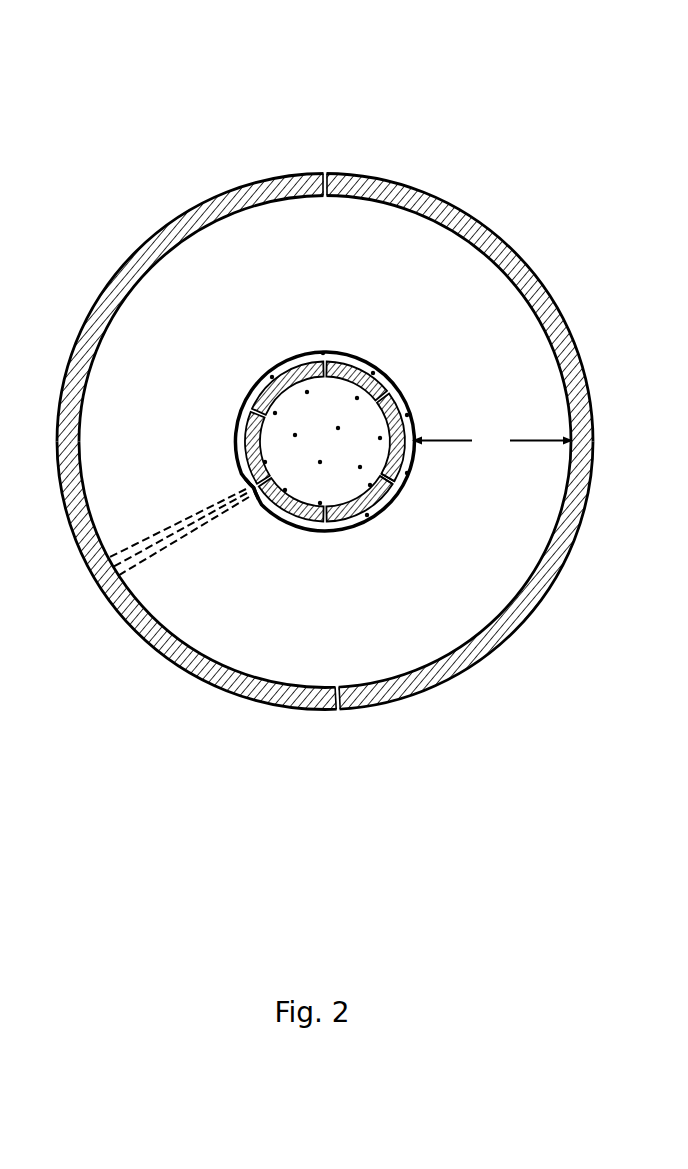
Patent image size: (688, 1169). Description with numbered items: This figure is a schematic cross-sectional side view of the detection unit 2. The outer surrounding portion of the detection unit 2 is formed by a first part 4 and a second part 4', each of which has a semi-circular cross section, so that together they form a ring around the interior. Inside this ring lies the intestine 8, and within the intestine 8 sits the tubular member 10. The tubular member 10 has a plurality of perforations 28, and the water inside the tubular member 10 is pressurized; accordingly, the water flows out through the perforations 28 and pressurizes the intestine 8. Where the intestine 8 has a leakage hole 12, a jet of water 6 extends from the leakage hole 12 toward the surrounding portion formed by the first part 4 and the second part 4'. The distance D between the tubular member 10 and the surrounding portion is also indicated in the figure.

The detection unit 2 is at (180, 134).
The first part 4 is at (318, 304).
The second part 4' is at (325, 423).
The jet of water 6 is at (164, 530).
The intestine 8 is at (246, 388).
The tubular member 10 is at (378, 369).
The leakage hole 12 is at (247, 500).
The perforations 28 is at (397, 487).